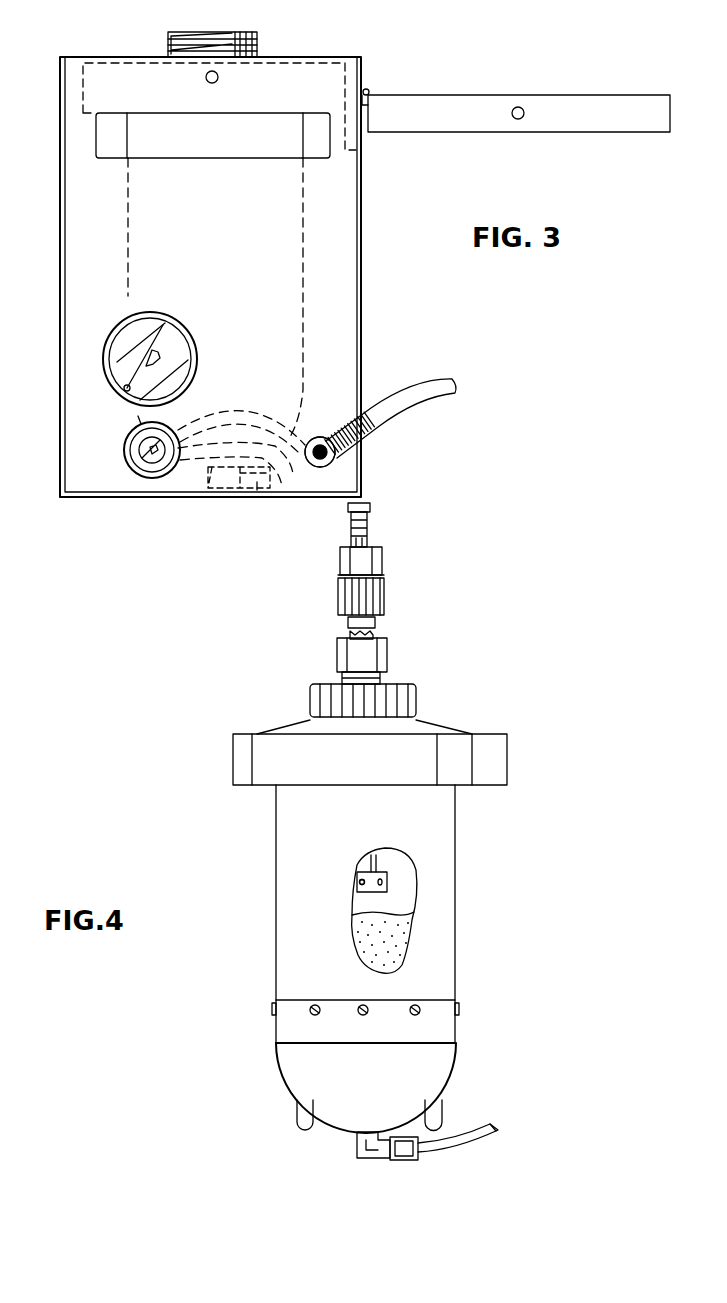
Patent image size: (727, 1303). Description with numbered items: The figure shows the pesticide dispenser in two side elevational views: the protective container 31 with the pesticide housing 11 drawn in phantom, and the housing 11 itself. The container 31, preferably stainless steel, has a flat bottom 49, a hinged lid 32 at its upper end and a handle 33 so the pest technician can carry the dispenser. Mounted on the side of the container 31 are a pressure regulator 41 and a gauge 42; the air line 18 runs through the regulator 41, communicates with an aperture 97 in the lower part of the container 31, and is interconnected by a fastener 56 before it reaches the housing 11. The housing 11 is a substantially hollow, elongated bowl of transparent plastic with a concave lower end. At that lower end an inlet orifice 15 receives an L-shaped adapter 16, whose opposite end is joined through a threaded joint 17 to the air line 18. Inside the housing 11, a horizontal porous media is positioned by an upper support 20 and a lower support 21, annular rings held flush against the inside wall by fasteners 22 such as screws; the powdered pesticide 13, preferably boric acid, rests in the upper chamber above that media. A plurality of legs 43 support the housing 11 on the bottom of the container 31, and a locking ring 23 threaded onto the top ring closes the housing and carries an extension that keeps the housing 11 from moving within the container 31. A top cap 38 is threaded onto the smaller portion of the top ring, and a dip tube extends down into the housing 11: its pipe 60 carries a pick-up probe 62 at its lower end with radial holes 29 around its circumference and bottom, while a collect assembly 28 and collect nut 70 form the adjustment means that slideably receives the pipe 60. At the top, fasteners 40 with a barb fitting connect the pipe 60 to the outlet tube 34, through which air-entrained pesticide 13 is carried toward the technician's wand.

In FIG. 3, the housing 11 is at (305, 236).
In FIG. 4, the housing 11 is at (455, 822).
In FIG. 4, the pesticide 13 is at (396, 941).
In FIG. 3, the inlet orifice 15 is at (208, 490).
In FIG. 4, the inlet orifice 15 is at (360, 1135).
In FIG. 4, the L-shaped adapter 16 is at (368, 1160).
In FIG. 3, the threaded joint 17 is at (255, 495).
In FIG. 3, the air line 18 is at (425, 392).
In FIG. 4, the air line 18 is at (480, 1140).
In FIG. 4, the upper support 20 is at (442, 1005).
In FIG. 4, the lower support 21 is at (447, 1042).
In FIG. 4, the fasteners 22 is at (363, 1004).
In FIG. 3, the locking ring 23 is at (83, 87).
In FIG. 4, the locking ring 23 is at (507, 764).
In FIG. 3, the collect assembly 28 is at (175, 38).
In FIG. 4, the radial holes 29 is at (360, 884).
In FIG. 3, the container 31 is at (61, 315).
In FIG. 3, the hinged lid 32 is at (462, 132).
In FIG. 3, the handles 33 is at (108, 135).
In FIG. 4, the outlet tube 34 is at (371, 508).
In FIG. 4, the top cap 38 is at (312, 704).
In FIG. 4, the fasteners 40 is at (383, 562).
In FIG. 3, the pressure regulator 41 is at (146, 478).
In FIG. 3, the gauge 42 is at (165, 335).
In FIG. 4, the legs 43 is at (298, 1122).
In FIG. 3, the flat bottom 49 is at (83, 500).
In FIG. 3, the fastener 56 is at (352, 440).
In FIG. 4, the pipe 60 is at (376, 623).
In FIG. 4, the pick-up probe 62 is at (387, 878).
In FIG. 4, the collect nut 70 is at (337, 660).
In FIG. 3, the aperture 97 is at (312, 465).